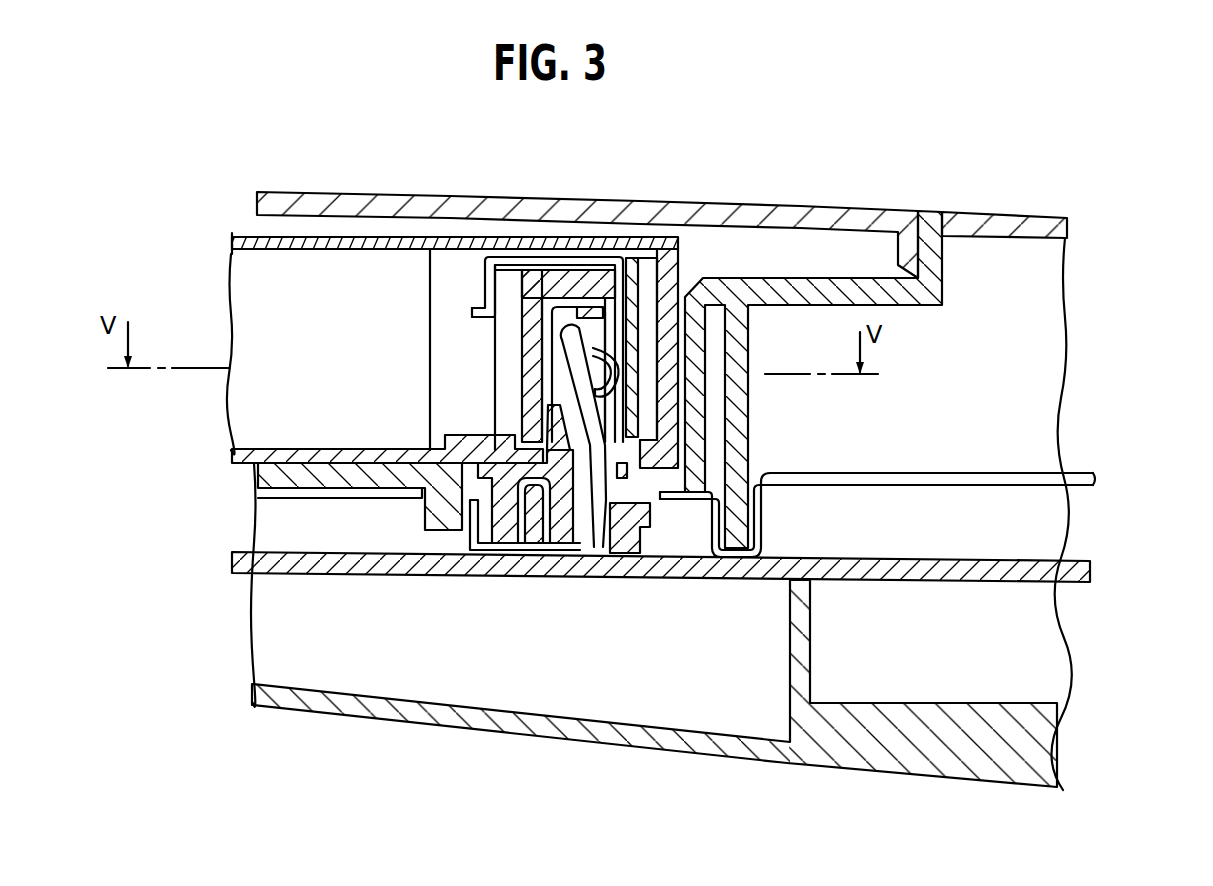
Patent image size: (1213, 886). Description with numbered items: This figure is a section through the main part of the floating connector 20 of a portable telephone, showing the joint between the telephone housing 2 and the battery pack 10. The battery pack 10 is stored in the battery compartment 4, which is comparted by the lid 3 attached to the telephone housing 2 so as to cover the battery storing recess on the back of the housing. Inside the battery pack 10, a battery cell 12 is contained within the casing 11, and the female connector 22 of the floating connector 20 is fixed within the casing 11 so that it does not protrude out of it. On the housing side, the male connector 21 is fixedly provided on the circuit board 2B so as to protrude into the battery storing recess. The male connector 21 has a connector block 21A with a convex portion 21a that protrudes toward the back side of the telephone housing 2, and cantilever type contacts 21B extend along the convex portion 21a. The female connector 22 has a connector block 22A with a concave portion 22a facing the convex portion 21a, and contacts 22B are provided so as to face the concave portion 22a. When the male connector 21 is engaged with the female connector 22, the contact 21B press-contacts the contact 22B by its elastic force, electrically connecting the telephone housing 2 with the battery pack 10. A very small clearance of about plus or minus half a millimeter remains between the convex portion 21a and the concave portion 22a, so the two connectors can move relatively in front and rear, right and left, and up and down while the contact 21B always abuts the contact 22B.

The telephone housing 2 is at (860, 778).
The circuit board 2B is at (246, 580).
The lid 3 is at (822, 195).
The battery compartment 4 is at (313, 232).
The battery pack 10 is at (222, 228).
The casing 11 is at (240, 462).
The battery cell 12 is at (247, 297).
The floating connector 20 is at (468, 381).
The male connector 21 is at (657, 542).
The connector block 21A is at (562, 520).
The cantilever type contacts 21B is at (598, 520).
The convex portion 21a is at (571, 322).
The female connector 22 is at (476, 284).
The connector block 22A is at (630, 330).
The contacts 22B is at (662, 262).
The concave portion 22a is at (538, 268).